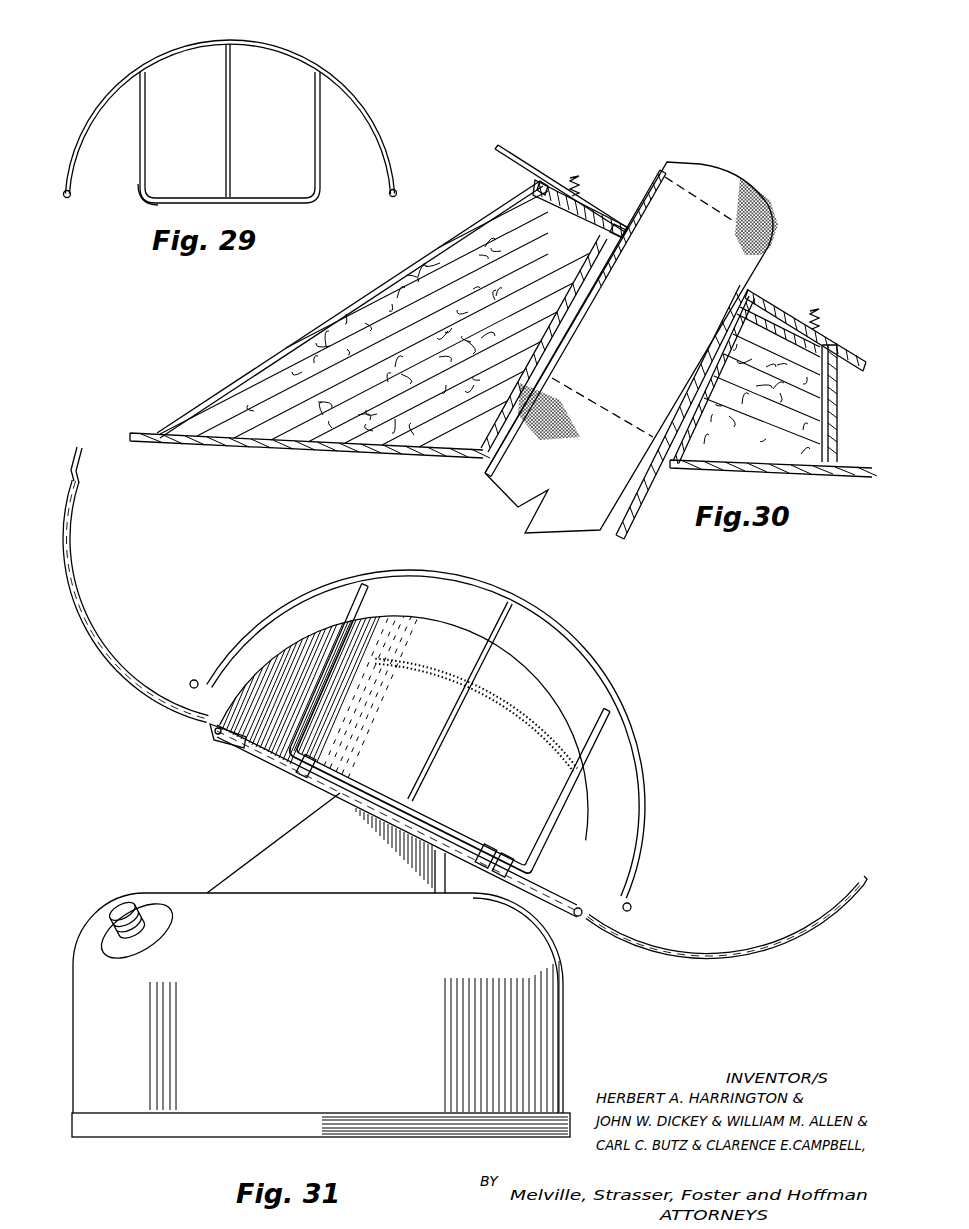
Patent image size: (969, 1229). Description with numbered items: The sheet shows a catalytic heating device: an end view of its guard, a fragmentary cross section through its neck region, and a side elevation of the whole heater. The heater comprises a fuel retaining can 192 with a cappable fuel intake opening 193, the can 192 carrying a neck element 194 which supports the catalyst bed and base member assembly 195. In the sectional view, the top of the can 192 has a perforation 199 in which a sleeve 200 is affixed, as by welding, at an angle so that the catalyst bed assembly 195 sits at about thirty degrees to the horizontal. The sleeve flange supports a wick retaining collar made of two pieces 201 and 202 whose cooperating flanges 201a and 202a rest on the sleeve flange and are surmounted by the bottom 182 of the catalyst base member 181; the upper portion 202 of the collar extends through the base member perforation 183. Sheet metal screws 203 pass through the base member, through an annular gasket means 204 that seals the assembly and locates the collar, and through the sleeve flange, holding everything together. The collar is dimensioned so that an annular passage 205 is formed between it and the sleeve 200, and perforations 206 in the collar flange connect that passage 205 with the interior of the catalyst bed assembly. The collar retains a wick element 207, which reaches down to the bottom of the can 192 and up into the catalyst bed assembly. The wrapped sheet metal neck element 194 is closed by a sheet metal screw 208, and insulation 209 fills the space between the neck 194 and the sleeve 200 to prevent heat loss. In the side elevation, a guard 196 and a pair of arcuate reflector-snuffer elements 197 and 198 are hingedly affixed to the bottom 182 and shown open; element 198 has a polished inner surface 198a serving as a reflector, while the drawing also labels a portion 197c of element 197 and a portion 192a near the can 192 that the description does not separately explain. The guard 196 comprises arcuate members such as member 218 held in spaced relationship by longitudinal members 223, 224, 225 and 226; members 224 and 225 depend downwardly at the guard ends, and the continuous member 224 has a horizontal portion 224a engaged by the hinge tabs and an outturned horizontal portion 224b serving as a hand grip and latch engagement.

In FIG. 30, the catalyst base member 181 is at (541, 159).
In FIG. 31, the catalyst base member 181 is at (476, 733).
In FIG. 30, the bottom of the catalyst base member 182 is at (509, 150).
In FIG. 31, the bottom of the catalyst base member 182 is at (528, 888).
In FIG. 30, the base member perforation 183 is at (571, 191).
In FIG. 30, the fuel retaining can 192 is at (328, 449).
In FIG. 31, the fuel retaining can 192 is at (330, 1003).
In FIG. 31, the hinge bracket 192a is at (123, 657).
In FIG. 31, the cappable fuel intake opening 193 is at (123, 908).
In FIG. 30, the neck element 194 is at (396, 279).
In FIG. 31, the neck element 194 is at (259, 859).
In FIG. 31, the catalyst bed and base member assembly 195 is at (548, 677).
In FIG. 29, the guard 196 is at (349, 98).
In FIG. 31, the guard 196 is at (642, 785).
In FIG. 31, the reflector-snuffer element 197 is at (84, 567).
In FIG. 31, the wire hook end 197c is at (82, 461).
In FIG. 31, the reflector-snuffer element 198 is at (701, 948).
In FIG. 31, the polished inner surface 198a is at (664, 946).
In FIG. 30, the perforation 199 is at (491, 461).
In FIG. 30, the sleeve 200 is at (518, 372).
In FIG. 30, the wick retaining collar piece 201 is at (602, 287).
In FIG. 30, the collar flange 201a is at (740, 303).
In FIG. 30, the upper portion of the wick retaining collar 202 is at (598, 204).
In FIG. 30, the collar flange 202a is at (748, 297).
In FIG. 30, the sheet metal screws 203 is at (574, 176).
In FIG. 30, the annular gasket means 204 is at (538, 199).
In FIG. 30, the annular passage 205 is at (553, 348).
In FIG. 30, the perforations 206 is at (622, 233).
In FIG. 30, the wick element 207 is at (713, 176).
In FIG. 30, the sheet metal screw 208 is at (838, 405).
In FIG. 30, the insulation 209 is at (323, 348).
In FIG. 29, the arcuate member 218 is at (279, 52).
In FIG. 31, the arcuate member 218 is at (506, 580).
In FIG. 29, the longitudinally extending member 223 is at (391, 190).
In FIG. 31, the longitudinally extending member 223 is at (633, 904).
In FIG. 29, the longitudinal member 224 is at (143, 126).
In FIG. 31, the longitudinal member 224 is at (370, 607).
In FIG. 29, the horizontal portion 224a is at (176, 199).
In FIG. 31, the horizontal portion 224a is at (375, 803).
In FIG. 29, the horizontal portion 224b is at (138, 203).
In FIG. 29, the longitudinal member 225 is at (231, 91).
In FIG. 31, the longitudinal member 225 is at (495, 638).
In FIG. 29, the longitudinally extending member 226 is at (68, 188).
In FIG. 31, the longitudinally extending member 226 is at (192, 680).